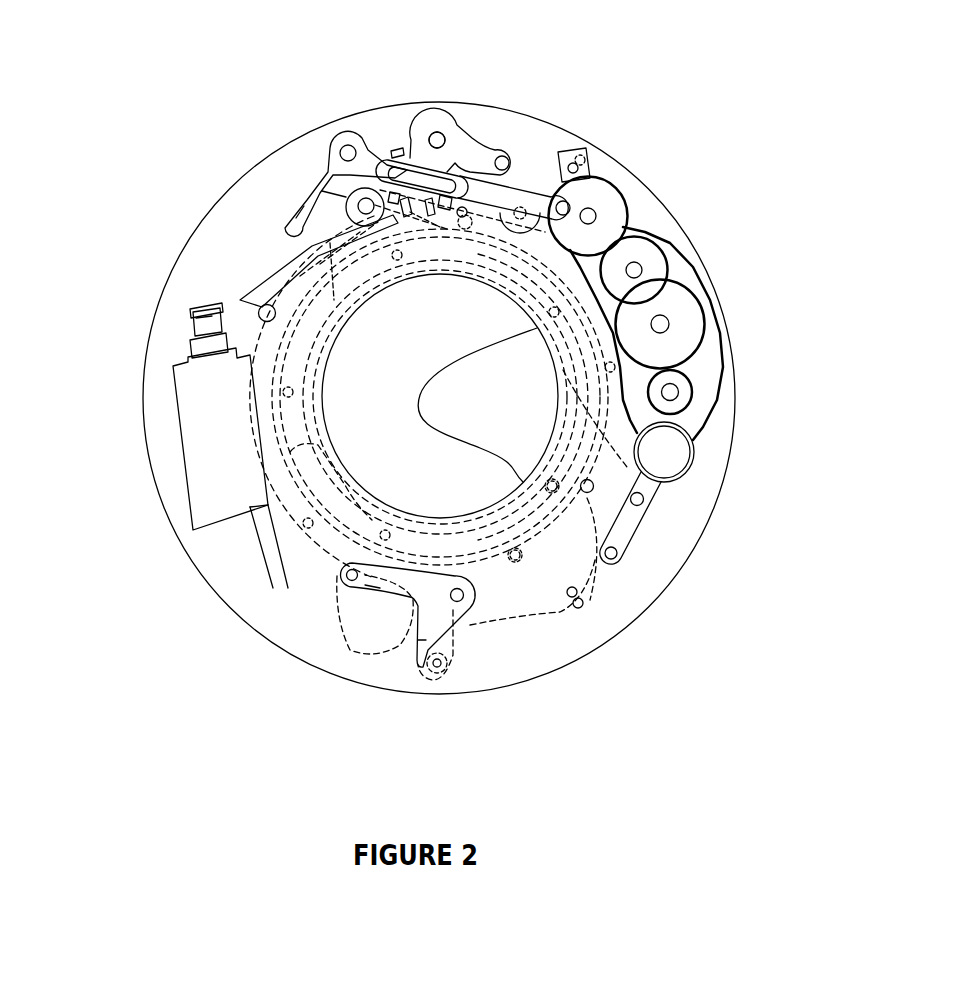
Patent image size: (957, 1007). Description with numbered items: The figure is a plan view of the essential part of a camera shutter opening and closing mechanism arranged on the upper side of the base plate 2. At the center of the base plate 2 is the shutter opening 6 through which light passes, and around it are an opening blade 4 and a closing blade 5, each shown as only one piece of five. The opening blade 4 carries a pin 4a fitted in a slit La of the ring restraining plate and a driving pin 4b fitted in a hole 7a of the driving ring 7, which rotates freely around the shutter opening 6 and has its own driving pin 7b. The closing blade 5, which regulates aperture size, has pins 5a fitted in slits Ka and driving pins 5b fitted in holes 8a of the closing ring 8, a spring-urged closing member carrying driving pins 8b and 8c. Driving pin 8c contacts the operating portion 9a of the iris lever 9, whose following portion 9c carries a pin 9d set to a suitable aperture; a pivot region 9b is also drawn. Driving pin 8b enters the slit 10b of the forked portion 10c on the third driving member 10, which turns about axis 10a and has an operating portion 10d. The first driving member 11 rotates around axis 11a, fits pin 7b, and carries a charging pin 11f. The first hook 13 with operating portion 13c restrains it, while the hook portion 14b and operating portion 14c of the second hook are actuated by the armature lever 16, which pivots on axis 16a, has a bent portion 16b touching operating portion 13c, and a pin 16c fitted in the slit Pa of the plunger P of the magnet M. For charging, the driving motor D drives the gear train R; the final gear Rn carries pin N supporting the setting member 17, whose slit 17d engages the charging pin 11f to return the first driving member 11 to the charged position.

The base plate 2 is at (232, 253).
The opening blade 4 is at (442, 408).
The pin 4a is at (600, 493).
The driving pin 4b is at (553, 487).
The closing blade 5 is at (325, 490).
The pin 5a is at (577, 594).
The driving pin 5b is at (515, 555).
The shutter opening 6 is at (325, 445).
The driving ring 7 is at (467, 203).
The hole 7a is at (498, 477).
The driving pin 7b is at (443, 230).
The closing ring 8 is at (487, 570).
The hole 8a is at (463, 529).
The driving pin 8b is at (575, 170).
The driving pin 8c is at (437, 665).
The iris lever 9 is at (427, 600).
The operating portion 9a is at (420, 650).
The pivot hole 9b is at (458, 600).
The following portion 9c is at (377, 587).
The pin 9d is at (352, 575).
The third driving member 10 is at (537, 183).
The axis 10a is at (520, 215).
The slit 10b is at (575, 160).
The forked portion 10c is at (560, 165).
The operating portion 10d is at (488, 160).
The first driving member 11 is at (428, 120).
The axis 11a is at (430, 136).
The charging pin 11f is at (460, 168).
The first hook 13 is at (333, 163).
The operating portion 13c is at (300, 212).
The hook portion 14b is at (430, 215).
The operating portion 14c is at (330, 243).
The armature lever 16 is at (277, 277).
The axis 16a is at (262, 310).
The bent portion 16b is at (306, 207).
The pin 16c is at (195, 312).
The setting member 17 is at (490, 178).
The slit 17d is at (410, 225).
The driving motor D is at (660, 460).
The slit Ka is at (578, 603).
The slit La is at (590, 492).
The magnet M is at (210, 467).
The pin N is at (600, 210).
The plunger P is at (200, 343).
The slit Pa is at (190, 323).
The gear train R is at (667, 302).
The gear Rn is at (608, 218).